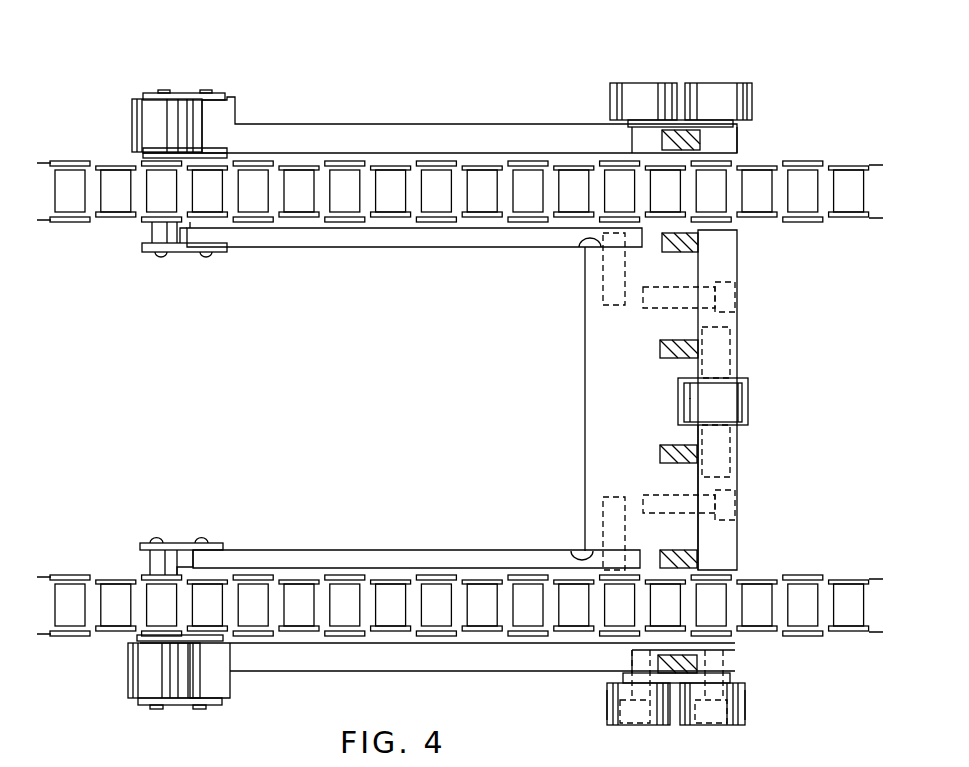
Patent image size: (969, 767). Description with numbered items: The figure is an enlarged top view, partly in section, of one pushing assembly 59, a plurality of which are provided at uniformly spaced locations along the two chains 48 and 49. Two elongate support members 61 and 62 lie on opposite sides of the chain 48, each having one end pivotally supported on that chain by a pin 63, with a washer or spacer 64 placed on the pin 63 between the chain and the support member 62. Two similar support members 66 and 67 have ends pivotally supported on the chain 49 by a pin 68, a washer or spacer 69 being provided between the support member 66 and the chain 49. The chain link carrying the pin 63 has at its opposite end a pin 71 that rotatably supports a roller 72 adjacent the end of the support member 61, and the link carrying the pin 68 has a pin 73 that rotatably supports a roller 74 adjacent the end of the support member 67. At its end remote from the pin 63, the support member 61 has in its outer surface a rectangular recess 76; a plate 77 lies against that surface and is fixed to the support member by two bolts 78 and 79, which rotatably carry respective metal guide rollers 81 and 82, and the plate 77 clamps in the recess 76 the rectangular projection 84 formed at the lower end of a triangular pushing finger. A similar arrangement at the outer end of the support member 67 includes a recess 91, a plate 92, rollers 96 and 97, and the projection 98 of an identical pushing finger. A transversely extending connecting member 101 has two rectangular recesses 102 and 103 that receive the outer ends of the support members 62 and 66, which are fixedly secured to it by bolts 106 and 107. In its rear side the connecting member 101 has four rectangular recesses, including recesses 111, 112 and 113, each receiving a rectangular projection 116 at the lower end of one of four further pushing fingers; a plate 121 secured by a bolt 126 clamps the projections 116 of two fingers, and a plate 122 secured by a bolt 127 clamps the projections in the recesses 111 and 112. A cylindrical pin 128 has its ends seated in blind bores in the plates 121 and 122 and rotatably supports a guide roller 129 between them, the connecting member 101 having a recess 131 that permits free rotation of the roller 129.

The chain 48 is at (67, 585).
The chain 49 is at (63, 203).
The pushing assembly 59 is at (345, 105).
The elongate support member 61 is at (272, 660).
The elongate support member 62 is at (313, 557).
The pin 63 is at (200, 708).
The washer or spacer 64 is at (223, 567).
The support member 66 is at (388, 232).
The support member 67 is at (397, 135).
The pin 68 is at (206, 88).
The washer or spacer 69 is at (207, 220).
The pin 71 is at (152, 708).
The roller 72 is at (142, 673).
The pin 73 is at (163, 88).
The roller 74 is at (140, 128).
The rectangular recess or groove 76 is at (697, 660).
The plate 77 is at (732, 680).
The bolt 78 is at (640, 712).
The bolt 79 is at (718, 717).
The metal guide roller 81 is at (610, 698).
The metal guide roller 82 is at (745, 707).
The rectangular projection 84 is at (697, 670).
The recess 91 is at (735, 142).
The plate 92 is at (737, 127).
The roller 96 is at (645, 83).
The roller 97 is at (716, 83).
The projection 98 is at (700, 137).
The connecting member 101 is at (593, 403).
The rectangular recess 102 is at (575, 553).
The rectangular recess 103 is at (597, 240).
The bolt 106 is at (603, 507).
The bolt 107 is at (603, 272).
The rectangular recess 111 is at (673, 253).
The rectangular recess 112 is at (660, 348).
The rectangular recess 113 is at (665, 452).
The rectangular projection 116 is at (700, 562).
The plate 121 is at (713, 533).
The plate 122 is at (717, 262).
The bolt 126 is at (722, 497).
The bolt 127 is at (722, 300).
The cylindrical pin 128 is at (720, 350).
The guide roller 129 is at (755, 398).
The recess 131 is at (695, 397).